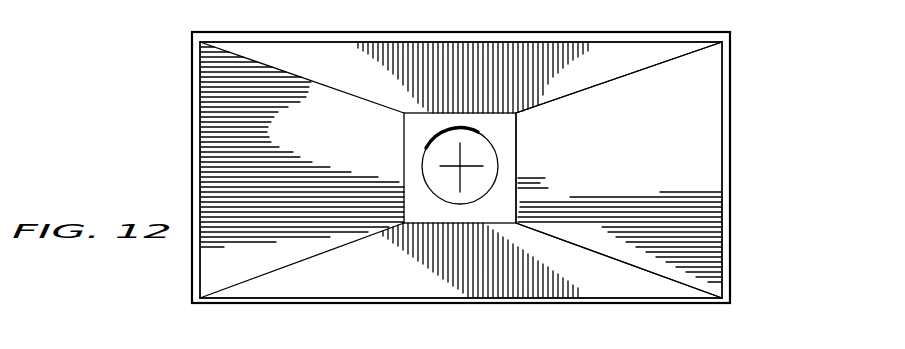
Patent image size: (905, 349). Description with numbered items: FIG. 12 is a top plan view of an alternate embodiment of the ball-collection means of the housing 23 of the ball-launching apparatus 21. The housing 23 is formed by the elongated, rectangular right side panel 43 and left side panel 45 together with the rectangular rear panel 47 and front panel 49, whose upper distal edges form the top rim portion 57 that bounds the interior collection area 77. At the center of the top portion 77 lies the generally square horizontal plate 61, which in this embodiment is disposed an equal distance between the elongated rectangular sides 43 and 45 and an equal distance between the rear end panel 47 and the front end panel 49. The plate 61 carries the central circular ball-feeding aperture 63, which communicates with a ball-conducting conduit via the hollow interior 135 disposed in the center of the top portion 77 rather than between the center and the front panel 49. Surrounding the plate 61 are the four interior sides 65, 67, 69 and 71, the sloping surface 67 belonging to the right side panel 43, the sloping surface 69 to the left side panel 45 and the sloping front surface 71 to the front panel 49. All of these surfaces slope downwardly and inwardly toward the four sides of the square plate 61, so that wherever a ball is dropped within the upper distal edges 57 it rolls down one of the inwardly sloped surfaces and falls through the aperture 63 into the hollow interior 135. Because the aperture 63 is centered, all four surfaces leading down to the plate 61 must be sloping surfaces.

The ball-launching apparatus 21 is at (748, 86).
The housing 23 is at (186, 264).
The right side panel 43 is at (357, 34).
The left side panel 45 is at (678, 304).
The rear panel 47 is at (193, 138).
The front panel 49 is at (732, 246).
The top rim portion 57 is at (298, 20).
The lower plate 61 is at (512, 144).
The ball-feeding aperture 63 is at (428, 151).
The sloping surface 65 is at (343, 168).
The sloping surface of right side panel 67 is at (475, 83).
The sloping surface of left side panel 69 is at (478, 273).
The sloping front surface 71 is at (644, 169).
The interior collection area 77 is at (690, 128).
The hollow interior 135 is at (490, 179).